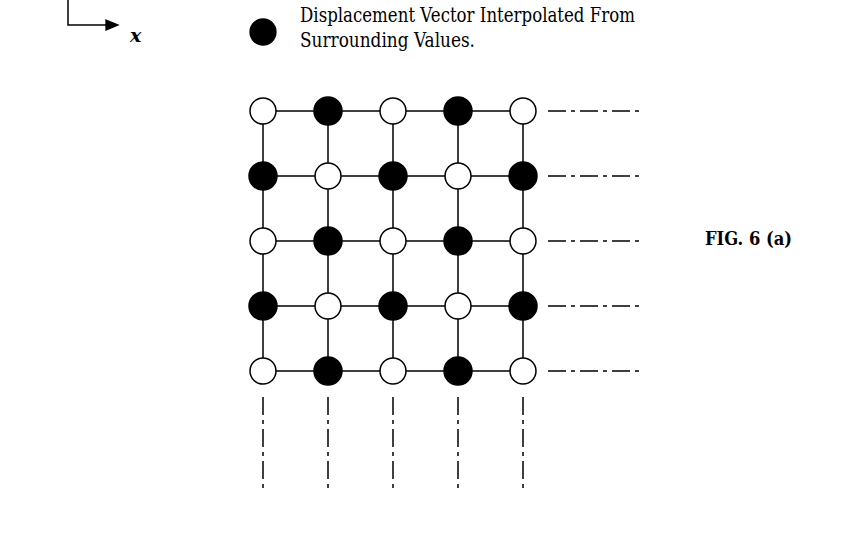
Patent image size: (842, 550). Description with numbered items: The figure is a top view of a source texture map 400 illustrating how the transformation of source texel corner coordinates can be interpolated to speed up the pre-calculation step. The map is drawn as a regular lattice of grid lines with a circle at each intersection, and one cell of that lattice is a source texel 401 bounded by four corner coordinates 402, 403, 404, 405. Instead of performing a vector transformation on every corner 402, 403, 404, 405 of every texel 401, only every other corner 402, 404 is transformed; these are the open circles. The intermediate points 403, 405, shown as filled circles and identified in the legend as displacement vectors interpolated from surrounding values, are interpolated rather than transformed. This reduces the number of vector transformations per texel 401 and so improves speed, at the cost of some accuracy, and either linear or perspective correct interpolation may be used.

The source texture map 400 is at (623, 393).
The source texel 401 is at (292, 267).
The corner coordinate 402 is at (250, 233).
The corner coordinate 403 is at (252, 303).
The corner coordinate 404 is at (333, 298).
The corner coordinate 405 is at (317, 232).